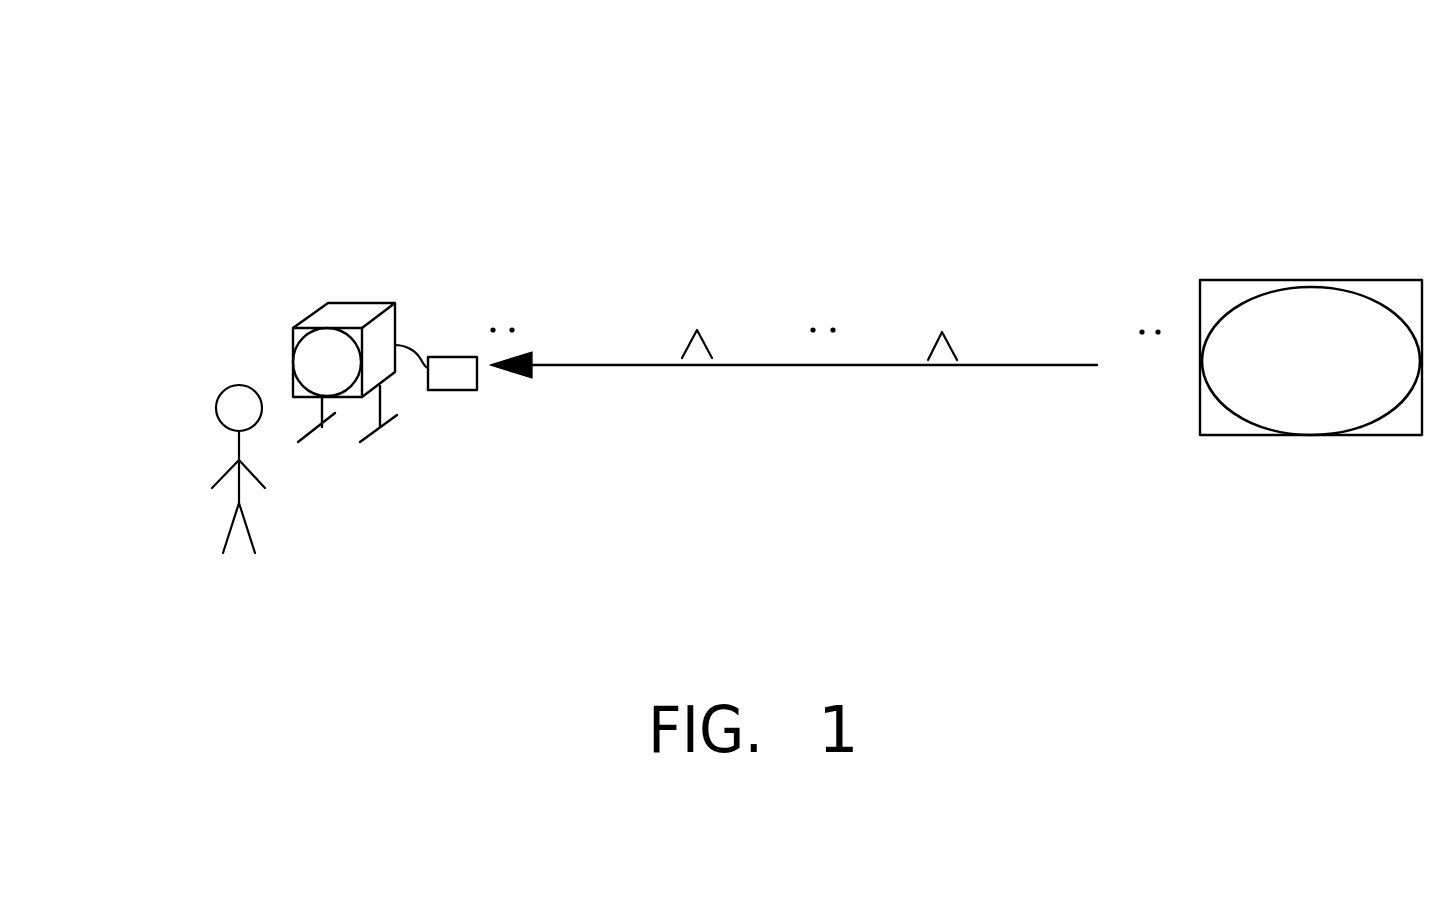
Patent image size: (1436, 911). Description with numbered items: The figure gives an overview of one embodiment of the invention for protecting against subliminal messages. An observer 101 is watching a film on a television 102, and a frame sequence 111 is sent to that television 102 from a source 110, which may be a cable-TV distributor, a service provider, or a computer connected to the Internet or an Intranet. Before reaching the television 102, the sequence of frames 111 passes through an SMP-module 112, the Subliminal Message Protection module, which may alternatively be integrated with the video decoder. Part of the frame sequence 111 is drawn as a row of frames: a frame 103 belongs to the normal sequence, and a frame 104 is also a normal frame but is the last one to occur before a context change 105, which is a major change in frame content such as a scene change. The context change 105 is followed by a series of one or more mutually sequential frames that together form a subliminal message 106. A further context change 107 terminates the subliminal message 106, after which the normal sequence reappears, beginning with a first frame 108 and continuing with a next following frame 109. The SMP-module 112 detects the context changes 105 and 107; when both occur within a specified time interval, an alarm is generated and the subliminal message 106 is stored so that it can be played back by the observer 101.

The observer 101 is at (218, 387).
The television 102 is at (347, 310).
The SMP-module 112 is at (453, 357).
The frame in the normal sequence 103 is at (545, 287).
The last frame in the normal sequence 104 is at (648, 295).
The context change 105 is at (697, 348).
The subliminal message 106 is at (807, 395).
The context change 107 is at (940, 350).
The first frame in the normal frame sequence 108 is at (1007, 287).
The next following frame 109 is at (1128, 285).
The source 110 is at (1342, 440).
The frame sequence 111 is at (525, 377).